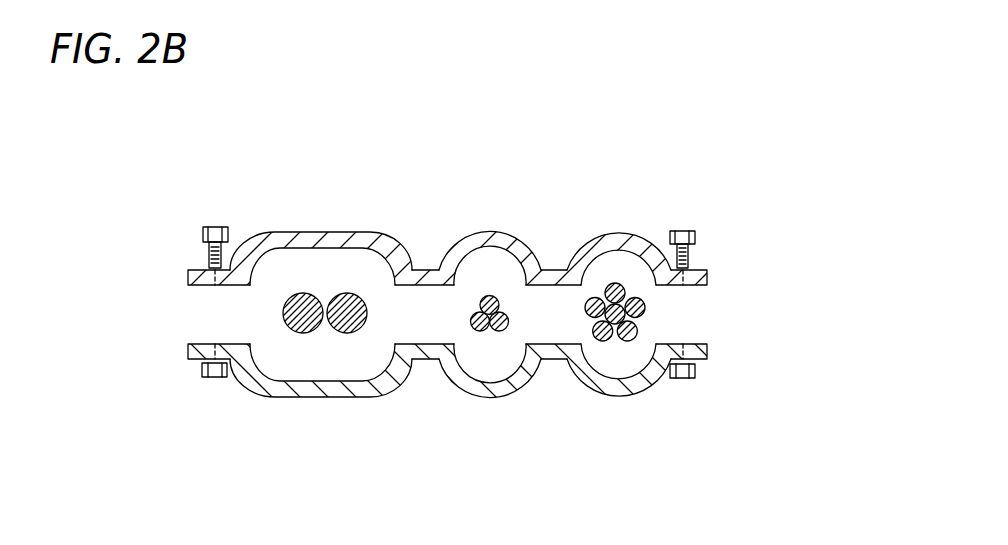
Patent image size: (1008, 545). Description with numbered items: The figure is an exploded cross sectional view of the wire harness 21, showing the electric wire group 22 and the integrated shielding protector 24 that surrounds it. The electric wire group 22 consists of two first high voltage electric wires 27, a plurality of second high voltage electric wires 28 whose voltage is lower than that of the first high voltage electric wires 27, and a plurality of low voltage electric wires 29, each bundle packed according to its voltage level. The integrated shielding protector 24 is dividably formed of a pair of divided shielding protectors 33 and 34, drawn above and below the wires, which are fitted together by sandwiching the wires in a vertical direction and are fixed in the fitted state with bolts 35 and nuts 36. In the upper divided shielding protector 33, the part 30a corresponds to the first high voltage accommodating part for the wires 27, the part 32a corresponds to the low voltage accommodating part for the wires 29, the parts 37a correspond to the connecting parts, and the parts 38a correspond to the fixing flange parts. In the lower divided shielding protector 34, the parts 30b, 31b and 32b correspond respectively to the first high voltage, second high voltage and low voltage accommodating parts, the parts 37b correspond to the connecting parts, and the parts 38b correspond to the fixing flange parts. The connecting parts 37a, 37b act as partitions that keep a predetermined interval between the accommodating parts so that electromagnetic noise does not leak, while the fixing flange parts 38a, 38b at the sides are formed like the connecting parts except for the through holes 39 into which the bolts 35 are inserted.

The wire harness 21 is at (592, 163).
The electric wire group 22 is at (247, 87).
The integrated shielding protector 24 is at (450, 246).
The first high voltage electric wire 27 is at (360, 445).
The second high voltage electric wire 28 is at (440, 472).
The low voltage electric wire 29 is at (590, 442).
The first high voltage accommodating part portion 30a is at (306, 262).
The first high voltage accommodating part portion 30b is at (323, 382).
The second high voltage accommodating part portion 31b is at (501, 380).
The low voltage accommodating part portion 32a is at (633, 272).
The low voltage accommodating part portion 32b is at (627, 362).
The divided shielding protector 33 is at (262, 238).
The divided shielding protector 34 is at (262, 382).
The bolt 35 is at (204, 226).
The nut 36 is at (204, 378).
The connecting part portion 37a is at (421, 268).
The connecting part portion 37b is at (411, 359).
The fixing flange part portion 38a is at (188, 278).
The fixing flange part portion 38b is at (188, 350).
The through hole 39 is at (215, 286).